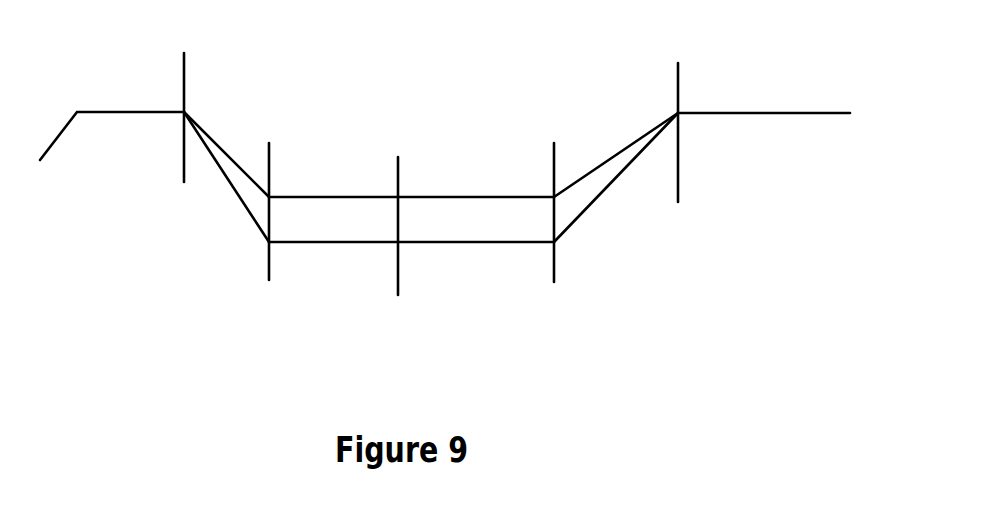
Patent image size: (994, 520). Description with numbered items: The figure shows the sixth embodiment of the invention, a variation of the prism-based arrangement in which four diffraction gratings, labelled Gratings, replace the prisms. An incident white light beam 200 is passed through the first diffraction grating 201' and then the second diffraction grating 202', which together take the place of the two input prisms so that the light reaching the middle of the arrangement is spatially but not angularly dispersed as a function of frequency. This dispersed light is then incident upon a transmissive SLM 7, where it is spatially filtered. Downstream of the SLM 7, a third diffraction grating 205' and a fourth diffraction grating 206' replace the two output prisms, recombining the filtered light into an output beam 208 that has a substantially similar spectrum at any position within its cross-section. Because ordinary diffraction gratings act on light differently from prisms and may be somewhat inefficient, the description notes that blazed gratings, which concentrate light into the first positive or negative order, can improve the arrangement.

The input beam 200 is at (107, 157).
The first diffraction grating 201' is at (115, 153).
The second diffraction grating 202' is at (206, 240).
The transmissive SLM 7 is at (400, 280).
The third diffraction grating 205' is at (638, 247).
The fourth diffraction grating 206' is at (756, 169).
The output beam 208 is at (792, 116).
The diffraction gratings Gratings is at (657, 83).